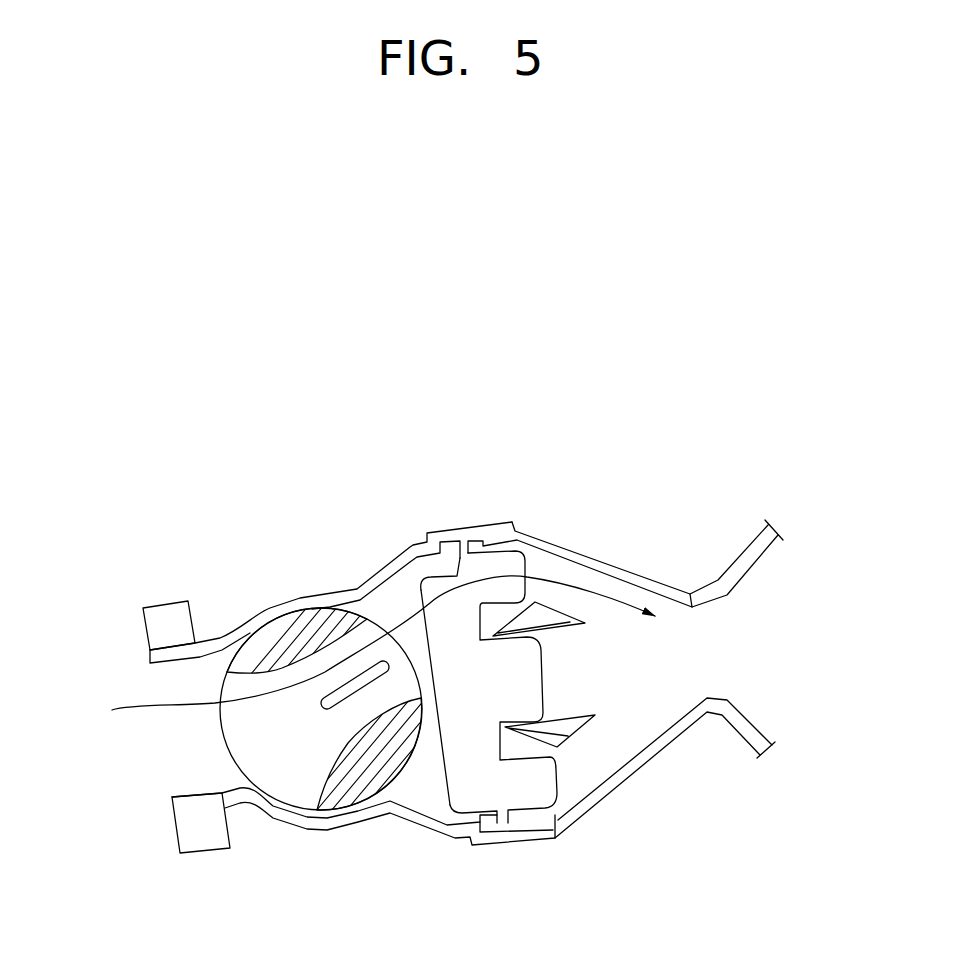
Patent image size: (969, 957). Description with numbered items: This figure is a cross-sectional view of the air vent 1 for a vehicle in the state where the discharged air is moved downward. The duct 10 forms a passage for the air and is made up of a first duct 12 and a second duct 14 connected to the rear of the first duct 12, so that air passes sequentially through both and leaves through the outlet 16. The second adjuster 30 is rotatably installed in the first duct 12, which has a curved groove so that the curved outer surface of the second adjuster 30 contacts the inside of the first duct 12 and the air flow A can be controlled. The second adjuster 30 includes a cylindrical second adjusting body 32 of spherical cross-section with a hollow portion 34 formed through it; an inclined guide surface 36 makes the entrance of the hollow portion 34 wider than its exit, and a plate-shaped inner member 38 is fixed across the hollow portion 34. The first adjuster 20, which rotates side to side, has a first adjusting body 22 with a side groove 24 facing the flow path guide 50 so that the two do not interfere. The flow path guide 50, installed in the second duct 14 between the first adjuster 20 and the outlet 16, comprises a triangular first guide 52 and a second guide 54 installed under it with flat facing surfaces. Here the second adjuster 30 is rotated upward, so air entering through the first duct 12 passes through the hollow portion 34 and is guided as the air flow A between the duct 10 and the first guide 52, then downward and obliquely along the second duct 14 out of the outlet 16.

The air vent 1 is at (561, 421).
The duct 10 is at (300, 540).
The first duct 12 is at (217, 635).
The second duct 14 is at (632, 578).
The outlet 16 is at (703, 637).
The first adjuster 20 is at (442, 799).
The first adjusting body 22 is at (465, 795).
The side groove 24 is at (518, 763).
The second adjuster 30 is at (388, 612).
The second adjusting body 32 is at (337, 788).
The hollow portion 34 is at (268, 758).
The inclined guide surface 36 is at (255, 672).
The inner member 38 is at (318, 706).
The flow path guide 50 is at (745, 793).
The first guide 52 is at (553, 617).
The second guide 54 is at (562, 733).
The air flow A is at (368, 668).